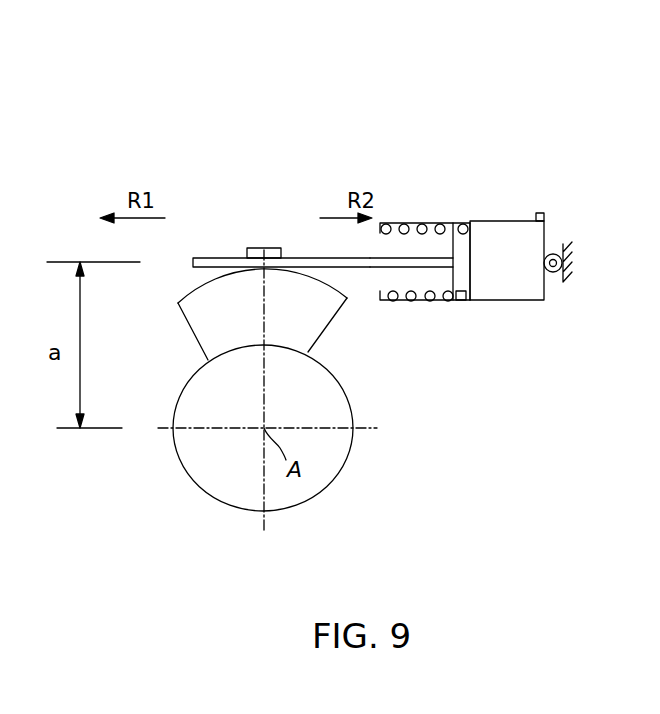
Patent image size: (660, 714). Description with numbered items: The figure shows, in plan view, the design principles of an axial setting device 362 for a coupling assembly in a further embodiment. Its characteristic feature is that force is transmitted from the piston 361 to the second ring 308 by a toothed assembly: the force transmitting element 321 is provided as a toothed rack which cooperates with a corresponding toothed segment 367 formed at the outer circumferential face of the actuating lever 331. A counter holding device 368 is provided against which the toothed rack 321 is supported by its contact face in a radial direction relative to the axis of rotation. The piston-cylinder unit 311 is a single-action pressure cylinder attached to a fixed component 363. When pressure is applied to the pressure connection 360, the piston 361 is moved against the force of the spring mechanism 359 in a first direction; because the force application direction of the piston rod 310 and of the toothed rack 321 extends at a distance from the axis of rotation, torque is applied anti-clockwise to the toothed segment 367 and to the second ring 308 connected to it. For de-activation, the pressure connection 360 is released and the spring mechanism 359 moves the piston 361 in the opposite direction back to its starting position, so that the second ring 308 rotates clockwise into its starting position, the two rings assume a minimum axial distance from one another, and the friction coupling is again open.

The second ring 308 is at (345, 407).
The piston rod 310 is at (413, 265).
The piston-cylinder unit 311 is at (496, 222).
The force transmitting element 321 is at (293, 262).
The actuating lever 331 is at (232, 274).
The spring mechanism 359 is at (430, 300).
The pressure connection 360 is at (541, 212).
The piston 361 is at (462, 250).
The axial setting device 362 is at (270, 108).
The fixed component 363 is at (583, 262).
The toothed segment 367 is at (230, 275).
The counter holding device 368 is at (255, 248).